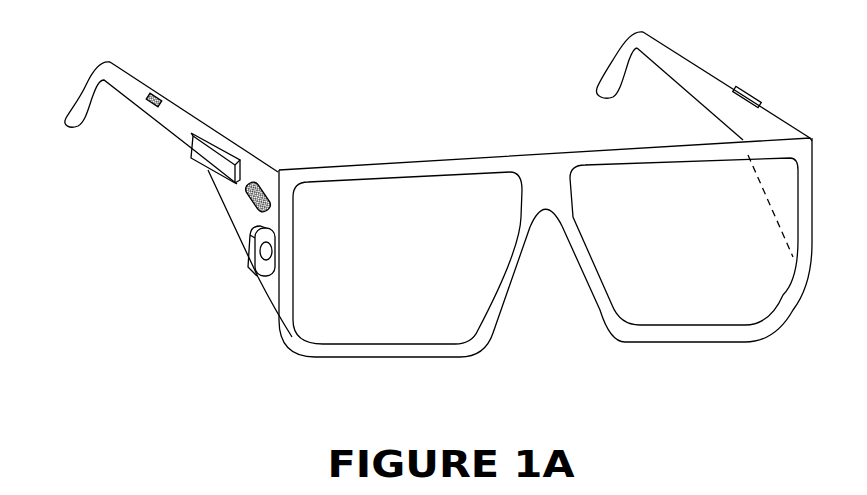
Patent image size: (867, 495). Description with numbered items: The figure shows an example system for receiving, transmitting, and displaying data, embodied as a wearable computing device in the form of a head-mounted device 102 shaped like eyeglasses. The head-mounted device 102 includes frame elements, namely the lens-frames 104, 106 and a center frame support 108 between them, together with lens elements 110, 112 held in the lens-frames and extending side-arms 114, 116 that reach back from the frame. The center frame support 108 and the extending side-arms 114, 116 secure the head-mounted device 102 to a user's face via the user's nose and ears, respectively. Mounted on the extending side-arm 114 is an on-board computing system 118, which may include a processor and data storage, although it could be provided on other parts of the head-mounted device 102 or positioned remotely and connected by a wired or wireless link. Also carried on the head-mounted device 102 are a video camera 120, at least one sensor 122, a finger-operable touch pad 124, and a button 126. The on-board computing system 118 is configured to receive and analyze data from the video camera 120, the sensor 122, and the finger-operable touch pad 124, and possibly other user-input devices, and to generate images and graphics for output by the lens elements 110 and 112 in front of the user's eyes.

The head-mounted device 102 is at (392, 72).
The lens-frame 104 is at (377, 170).
The lens-frame 106 is at (625, 153).
The center frame support 108 is at (545, 178).
The lens element 110 is at (348, 322).
The lens element 112 is at (702, 307).
The extending side-arm 114 is at (213, 130).
The extending side-arm 116 is at (703, 73).
The on-board computing system 118 is at (207, 155).
The video camera 120 is at (248, 244).
The sensor 122 is at (750, 92).
The finger-operable touch pad 124 is at (248, 198).
The button 126 is at (147, 99).